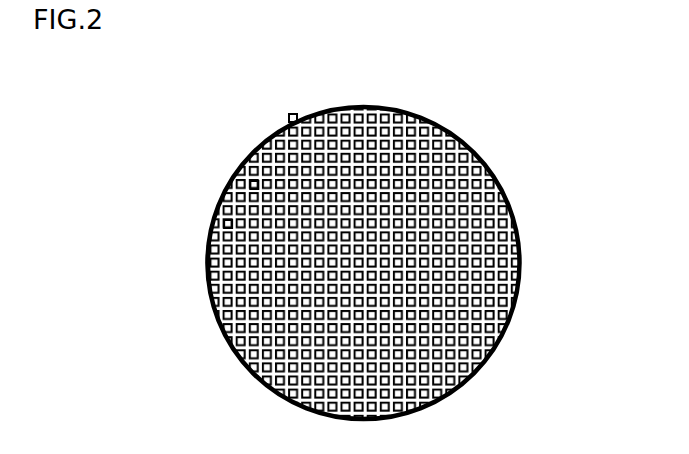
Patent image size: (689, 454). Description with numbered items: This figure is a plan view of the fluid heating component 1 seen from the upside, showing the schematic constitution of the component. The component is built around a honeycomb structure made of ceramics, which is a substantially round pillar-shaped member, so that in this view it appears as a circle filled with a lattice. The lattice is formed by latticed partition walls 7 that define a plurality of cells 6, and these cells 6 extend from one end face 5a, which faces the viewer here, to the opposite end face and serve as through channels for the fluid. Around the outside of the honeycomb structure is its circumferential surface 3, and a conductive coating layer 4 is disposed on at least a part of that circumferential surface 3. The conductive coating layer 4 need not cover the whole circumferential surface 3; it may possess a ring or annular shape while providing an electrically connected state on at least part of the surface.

The fluid heating component 1 is at (547, 217).
The one end face 5a is at (434, 125).
The circumferential surface 3 is at (297, 118).
The conductive coating layer 4 is at (207, 258).
The cells 6 is at (245, 185).
The partition walls 7 is at (215, 220).